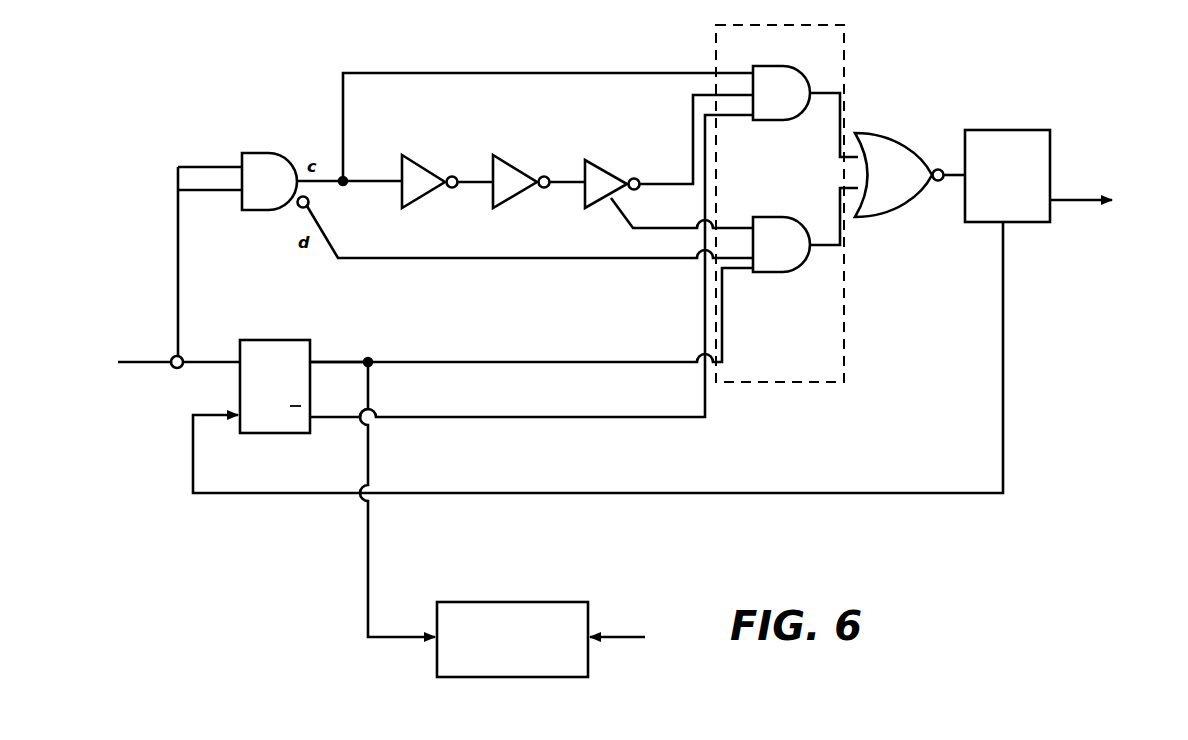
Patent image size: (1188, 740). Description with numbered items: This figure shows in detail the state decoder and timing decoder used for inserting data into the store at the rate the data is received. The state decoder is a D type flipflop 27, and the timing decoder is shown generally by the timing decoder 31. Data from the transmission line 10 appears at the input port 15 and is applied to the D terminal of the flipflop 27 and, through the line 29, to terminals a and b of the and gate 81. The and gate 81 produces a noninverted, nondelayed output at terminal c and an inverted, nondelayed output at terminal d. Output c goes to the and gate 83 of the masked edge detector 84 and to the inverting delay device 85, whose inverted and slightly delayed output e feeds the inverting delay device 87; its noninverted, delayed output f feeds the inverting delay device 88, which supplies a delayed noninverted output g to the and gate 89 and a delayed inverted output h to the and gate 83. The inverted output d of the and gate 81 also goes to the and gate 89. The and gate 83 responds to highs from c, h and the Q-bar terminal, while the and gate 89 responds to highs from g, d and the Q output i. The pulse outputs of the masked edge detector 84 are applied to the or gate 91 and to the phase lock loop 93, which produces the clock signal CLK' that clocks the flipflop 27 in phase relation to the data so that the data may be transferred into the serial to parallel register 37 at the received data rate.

The transmission line 10 is at (128, 362).
The input port 15 is at (174, 370).
The D type flipflop 27 is at (262, 433).
The line 29 is at (178, 273).
The timing decoder 31 is at (290, 110).
The serial to parallel register 37 is at (520, 602).
The and gate 81 is at (265, 210).
The and gate 83 is at (780, 66).
The masked edge detector 84 is at (716, 50).
The inverting delay device 85 is at (435, 200).
The inverting delay device 87 is at (518, 200).
The inverting delay device 88 is at (632, 150).
The and gate 89 is at (800, 217).
The or gate 91 is at (918, 118).
The phase lock loop 93 is at (1010, 130).